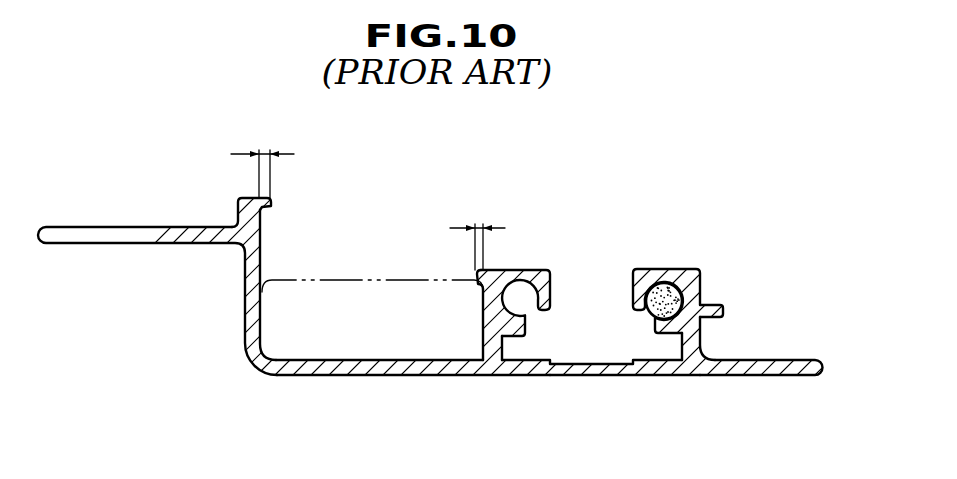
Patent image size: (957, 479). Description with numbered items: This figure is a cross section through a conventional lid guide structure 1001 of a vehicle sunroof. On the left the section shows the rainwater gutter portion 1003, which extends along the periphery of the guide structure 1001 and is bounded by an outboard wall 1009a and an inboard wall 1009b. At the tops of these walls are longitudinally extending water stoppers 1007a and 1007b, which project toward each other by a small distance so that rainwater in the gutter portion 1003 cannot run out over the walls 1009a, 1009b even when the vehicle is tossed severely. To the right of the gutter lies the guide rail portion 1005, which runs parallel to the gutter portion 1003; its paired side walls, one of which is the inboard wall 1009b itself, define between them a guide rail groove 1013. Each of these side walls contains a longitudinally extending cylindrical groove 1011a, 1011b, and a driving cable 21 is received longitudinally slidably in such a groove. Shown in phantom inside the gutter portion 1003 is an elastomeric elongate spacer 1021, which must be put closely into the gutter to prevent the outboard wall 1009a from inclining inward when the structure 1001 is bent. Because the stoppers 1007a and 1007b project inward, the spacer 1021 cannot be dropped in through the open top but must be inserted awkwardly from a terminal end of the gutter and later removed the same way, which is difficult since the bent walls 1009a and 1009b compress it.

The lid guide structure 1001 is at (750, 378).
The rainwater gutter portion 1003 is at (362, 378).
The guide rail portion 1005 is at (594, 378).
The water stopper 1007a is at (268, 211).
The water stopper 1007b is at (478, 280).
The outboard wall 1009a is at (257, 268).
The inboard wall 1009b is at (492, 362).
The cylindrical groove 1011a is at (520, 283).
The cylindrical groove 1011b is at (703, 286).
The guide rail groove 1013 is at (662, 358).
The elastomeric elongate spacer 1021 is at (356, 298).
The driving cable 21 is at (662, 295).